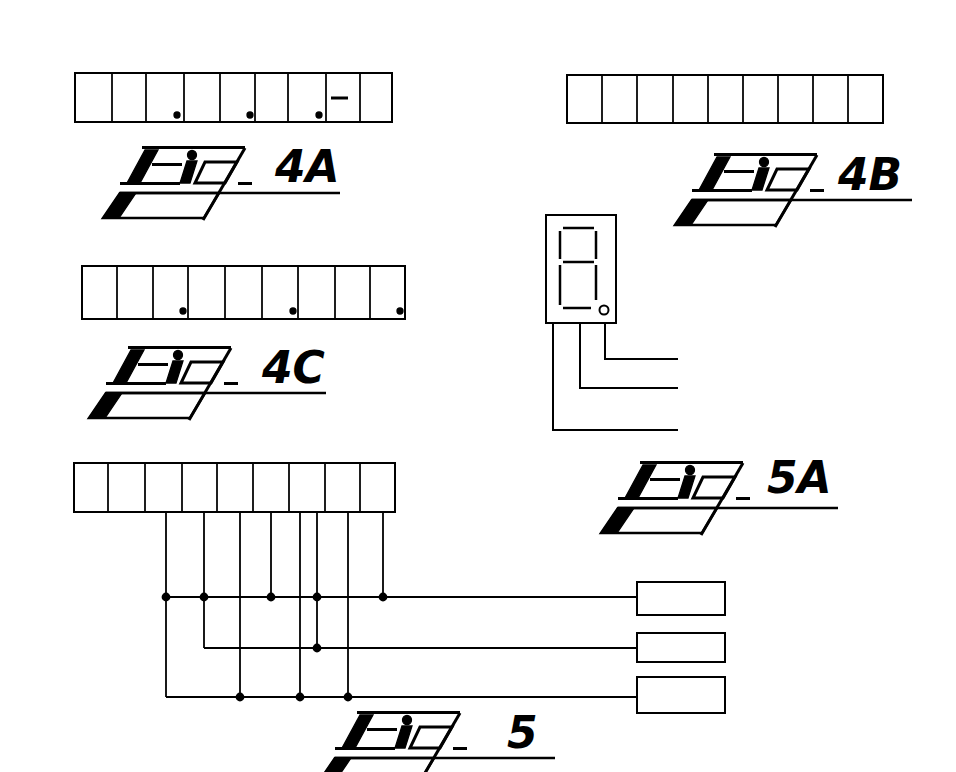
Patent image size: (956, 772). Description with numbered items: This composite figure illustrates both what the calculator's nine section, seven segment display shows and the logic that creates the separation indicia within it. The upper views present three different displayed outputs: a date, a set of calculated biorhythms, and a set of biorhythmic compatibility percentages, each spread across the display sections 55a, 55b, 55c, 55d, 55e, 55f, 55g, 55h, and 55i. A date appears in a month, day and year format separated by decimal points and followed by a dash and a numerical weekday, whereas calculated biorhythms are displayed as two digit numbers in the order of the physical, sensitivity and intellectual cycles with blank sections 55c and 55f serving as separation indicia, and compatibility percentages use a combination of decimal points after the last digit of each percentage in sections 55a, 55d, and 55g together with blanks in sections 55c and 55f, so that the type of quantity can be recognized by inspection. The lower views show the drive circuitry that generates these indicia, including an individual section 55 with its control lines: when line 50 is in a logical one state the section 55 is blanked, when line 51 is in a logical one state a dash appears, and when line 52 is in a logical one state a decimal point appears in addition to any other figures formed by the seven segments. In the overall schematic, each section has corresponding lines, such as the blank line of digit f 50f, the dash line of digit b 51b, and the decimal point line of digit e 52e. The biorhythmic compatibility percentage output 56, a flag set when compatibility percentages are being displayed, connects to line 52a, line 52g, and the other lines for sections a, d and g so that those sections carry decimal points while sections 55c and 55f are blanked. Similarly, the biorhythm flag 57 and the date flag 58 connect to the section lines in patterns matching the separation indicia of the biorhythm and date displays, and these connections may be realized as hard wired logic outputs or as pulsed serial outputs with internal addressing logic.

In FIG. 4A, the display section 55a is at (380, 72).
In FIG. 4B, the display section 55a is at (863, 74).
In FIG. 4C, the display section 55a is at (390, 265).
In FIG. 5, the display section 55a is at (380, 463).
In FIG. 4A, the display section 55b is at (338, 72).
In FIG. 4B, the display section 55b is at (830, 74).
In FIG. 4C, the display section 55b is at (353, 265).
In FIG. 5, the display section 55b is at (353, 463).
In FIG. 4A, the display section 55c is at (305, 72).
In FIG. 4B, the display section 55c is at (793, 74).
In FIG. 4C, the display section 55c is at (322, 265).
In FIG. 5, the display section 55c is at (313, 463).
In FIG. 4A, the display section 55d is at (270, 72).
In FIG. 4B, the display section 55d is at (757, 74).
In FIG. 4C, the display section 55d is at (288, 265).
In FIG. 5, the display section 55d is at (272, 463).
In FIG. 4A, the display section 55e is at (235, 72).
In FIG. 4B, the display section 55e is at (722, 74).
In FIG. 4C, the display section 55e is at (238, 265).
In FIG. 5, the display section 55e is at (233, 463).
In FIG. 4A, the display section 55f is at (198, 72).
In FIG. 4B, the display section 55f is at (693, 74).
In FIG. 4C, the display section 55f is at (222, 240).
In FIG. 5, the display section 55f is at (197, 463).
In FIG. 4A, the display section 55g is at (167, 72).
In FIG. 4B, the display section 55g is at (652, 74).
In FIG. 4C, the display section 55g is at (175, 265).
In FIG. 5, the display section 55g is at (160, 463).
In FIG. 4A, the display section 55h is at (132, 72).
In FIG. 4B, the display section 55h is at (623, 74).
In FIG. 4C, the display section 55h is at (140, 265).
In FIG. 5, the display section 55h is at (118, 463).
In FIG. 4A, the display section 55i is at (100, 72).
In FIG. 4B, the display section 55i is at (583, 74).
In FIG. 4C, the display section 55i is at (88, 265).
In FIG. 5, the display section 55i is at (72, 468).
In FIG. 5A, the section 55 is at (617, 267).
In FIG. 5A, the line 50 is at (605, 347).
In FIG. 5, the line 50 is at (318, 553).
In FIG. 5A, the line 51 is at (578, 348).
In FIG. 5A, the line 52 is at (553, 403).
In FIG. 5, the line 52 is at (298, 552).
In FIG. 5, the line 52g is at (166, 530).
In FIG. 5, the blank line of digit f 50f is at (204, 562).
In FIG. 5, the decimal point line of digit e 52e is at (238, 673).
In FIG. 5, the dash line of digit b 51b is at (348, 572).
In FIG. 5, the line 52a is at (383, 548).
In FIG. 5, the biorhythmic compatibility percentage output 56 is at (725, 597).
In FIG. 5, the biorhythm flag 57 is at (725, 645).
In FIG. 5, the date flag 58 is at (725, 697).